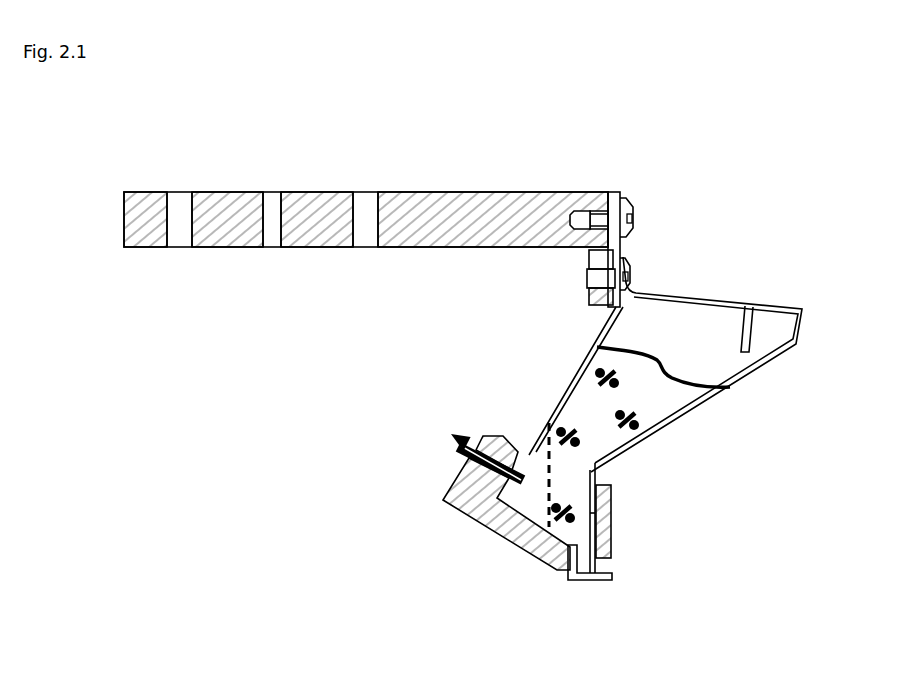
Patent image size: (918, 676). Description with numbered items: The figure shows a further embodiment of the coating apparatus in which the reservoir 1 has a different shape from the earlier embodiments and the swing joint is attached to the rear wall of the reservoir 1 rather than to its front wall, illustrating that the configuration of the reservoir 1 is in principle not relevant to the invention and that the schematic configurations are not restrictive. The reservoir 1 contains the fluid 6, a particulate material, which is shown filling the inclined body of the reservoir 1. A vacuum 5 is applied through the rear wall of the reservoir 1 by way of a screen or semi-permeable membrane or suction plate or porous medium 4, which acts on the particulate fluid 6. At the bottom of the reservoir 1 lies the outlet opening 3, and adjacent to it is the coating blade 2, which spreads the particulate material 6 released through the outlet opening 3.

The reservoir 1 is at (852, 253).
The coating blade 2 is at (615, 582).
The outlet opening 3 is at (613, 566).
The screen or semi-permeable membrane or suction plate or porous medium 4 is at (557, 477).
The vacuum 5 is at (482, 454).
The fluid (particulate material) 6 is at (680, 328).